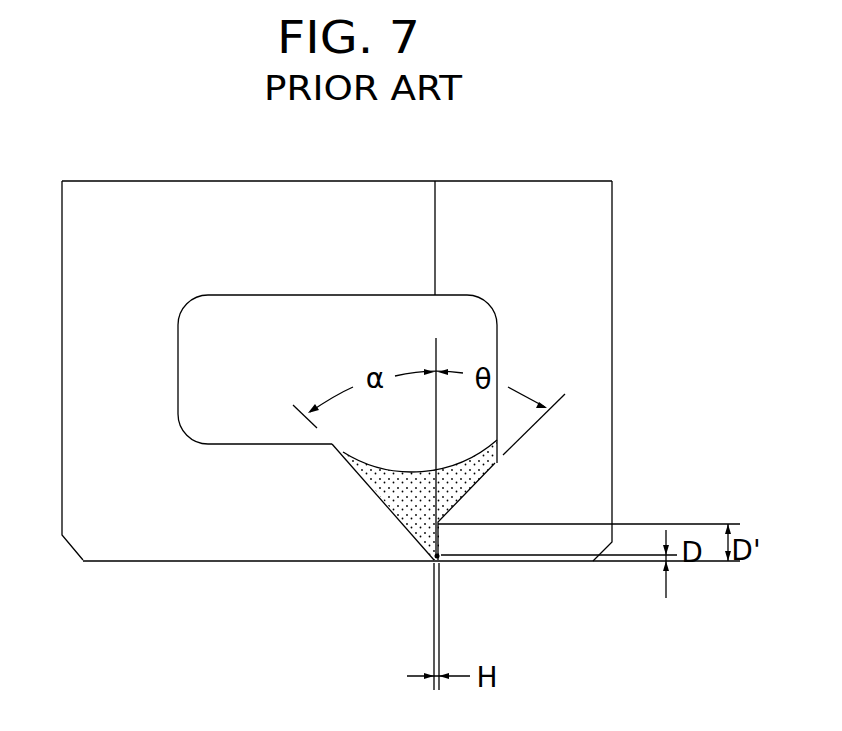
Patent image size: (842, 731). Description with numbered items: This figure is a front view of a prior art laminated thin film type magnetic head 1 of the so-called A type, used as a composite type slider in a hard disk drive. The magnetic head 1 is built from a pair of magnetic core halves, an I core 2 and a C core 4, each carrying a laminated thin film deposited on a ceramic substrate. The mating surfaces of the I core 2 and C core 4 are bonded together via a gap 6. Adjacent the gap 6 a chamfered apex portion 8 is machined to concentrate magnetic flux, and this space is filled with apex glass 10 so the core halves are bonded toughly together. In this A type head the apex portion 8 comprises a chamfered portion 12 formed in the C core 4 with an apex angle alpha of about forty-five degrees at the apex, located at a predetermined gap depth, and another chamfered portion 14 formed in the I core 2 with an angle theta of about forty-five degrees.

The magnetic head 1 is at (332, 176).
The I core 2 is at (578, 200).
The C core 4 is at (114, 197).
The gap 6 is at (438, 563).
The apex portion 8 is at (401, 456).
The apex glass 10 is at (463, 470).
The chamfered portion 12 is at (380, 489).
The another chamfered portion 14 is at (459, 500).